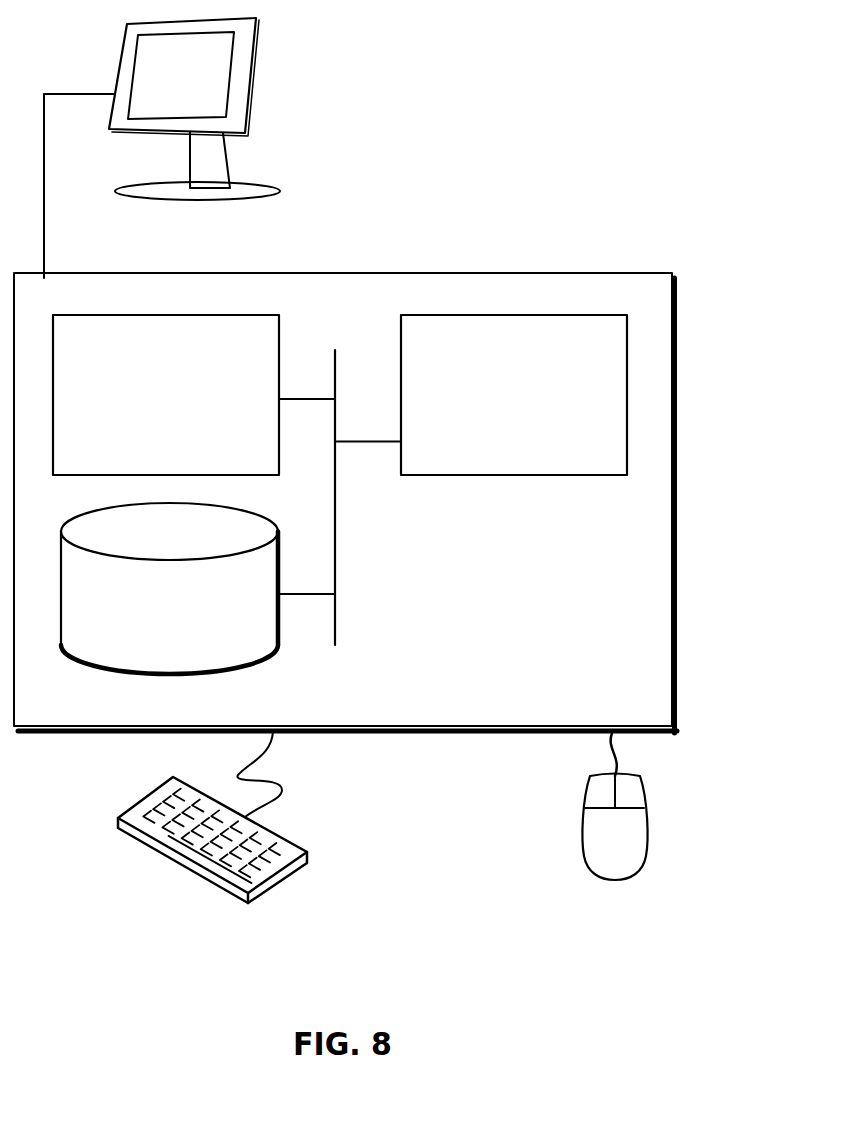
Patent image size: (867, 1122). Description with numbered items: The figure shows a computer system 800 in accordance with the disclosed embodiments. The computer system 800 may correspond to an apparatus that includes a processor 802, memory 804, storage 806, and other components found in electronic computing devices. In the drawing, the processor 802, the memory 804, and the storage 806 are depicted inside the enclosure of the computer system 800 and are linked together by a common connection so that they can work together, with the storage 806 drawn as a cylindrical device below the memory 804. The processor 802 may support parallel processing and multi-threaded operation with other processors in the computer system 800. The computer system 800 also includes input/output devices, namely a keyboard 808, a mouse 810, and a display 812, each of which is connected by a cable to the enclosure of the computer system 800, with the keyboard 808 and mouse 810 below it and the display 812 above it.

The computer system 800 is at (390, 252).
The processor 802 is at (497, 407).
The memory 804 is at (147, 407).
The storage 806 is at (193, 619).
The keyboard 808 is at (136, 838).
The mouse 810 is at (595, 849).
The display 812 is at (162, 148).